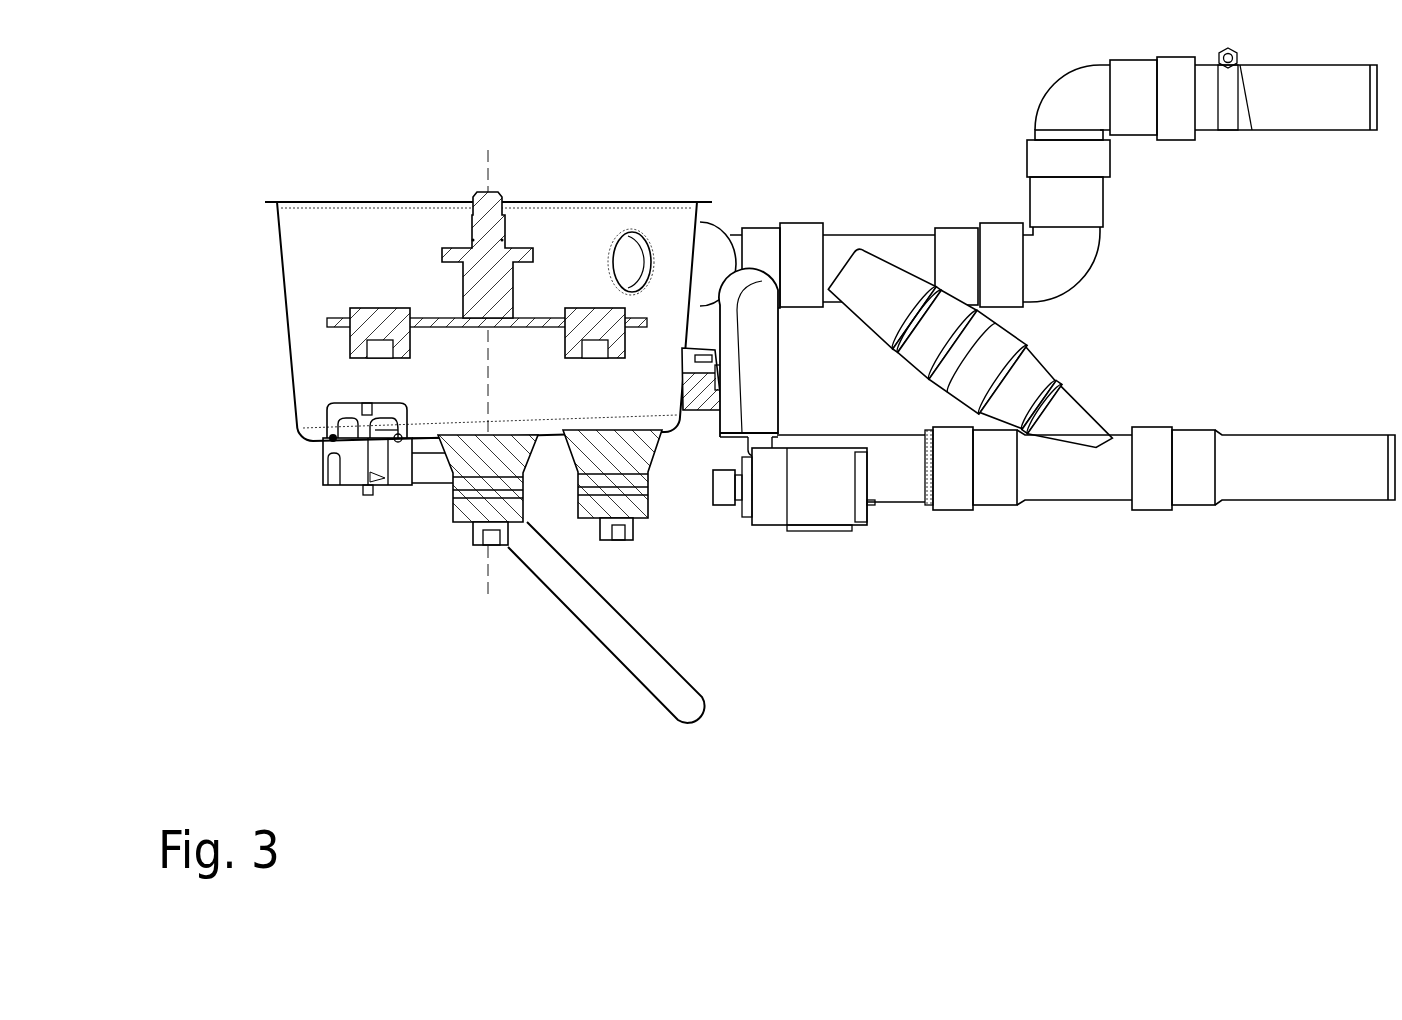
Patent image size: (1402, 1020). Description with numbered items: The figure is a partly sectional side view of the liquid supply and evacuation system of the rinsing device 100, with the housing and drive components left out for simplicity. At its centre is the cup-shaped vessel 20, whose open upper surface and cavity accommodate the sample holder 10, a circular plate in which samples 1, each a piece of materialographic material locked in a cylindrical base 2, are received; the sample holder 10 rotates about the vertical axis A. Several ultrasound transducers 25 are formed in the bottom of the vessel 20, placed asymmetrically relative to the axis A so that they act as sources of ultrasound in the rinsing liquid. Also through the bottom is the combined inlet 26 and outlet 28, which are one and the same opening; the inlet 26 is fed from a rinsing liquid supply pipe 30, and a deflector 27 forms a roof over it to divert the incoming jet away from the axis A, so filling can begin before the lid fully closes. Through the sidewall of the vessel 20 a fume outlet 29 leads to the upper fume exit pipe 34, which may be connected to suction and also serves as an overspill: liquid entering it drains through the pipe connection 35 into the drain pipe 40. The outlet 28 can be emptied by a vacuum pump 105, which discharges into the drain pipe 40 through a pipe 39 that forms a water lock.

The rinsing device 100 is at (302, 178).
The base 2 is at (368, 308).
The sample 1 is at (374, 360).
The vessel 20 is at (282, 268).
The sample holder 10 is at (328, 323).
The rotational axis A is at (483, 165).
The fume outlet 29 is at (632, 255).
The upper fume exit pipe 34 is at (900, 238).
The deflector 27 is at (330, 432).
The inlet 26 is at (345, 487).
The outlet 28 is at (367, 466).
The rinsing liquid supply pipe 30 is at (423, 483).
The ultrasound transducer 25 is at (463, 520).
The pipe 39 is at (758, 373).
The pump 105 is at (843, 490).
The pipe connection 35 is at (942, 348).
The drain pipe 40 is at (1147, 482).